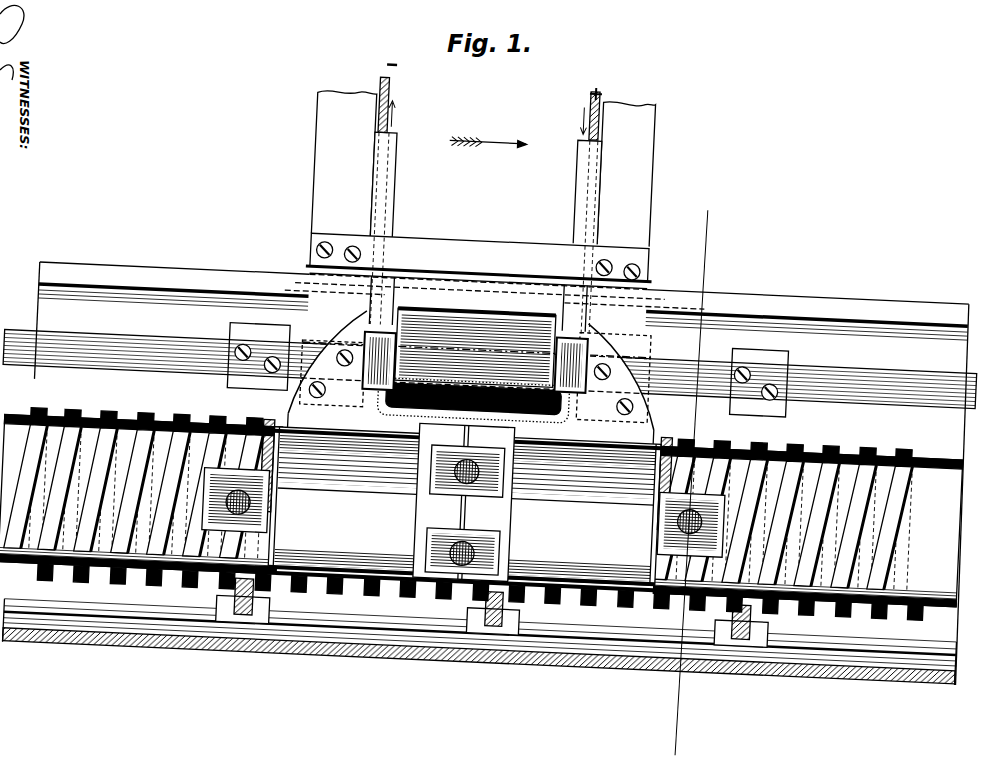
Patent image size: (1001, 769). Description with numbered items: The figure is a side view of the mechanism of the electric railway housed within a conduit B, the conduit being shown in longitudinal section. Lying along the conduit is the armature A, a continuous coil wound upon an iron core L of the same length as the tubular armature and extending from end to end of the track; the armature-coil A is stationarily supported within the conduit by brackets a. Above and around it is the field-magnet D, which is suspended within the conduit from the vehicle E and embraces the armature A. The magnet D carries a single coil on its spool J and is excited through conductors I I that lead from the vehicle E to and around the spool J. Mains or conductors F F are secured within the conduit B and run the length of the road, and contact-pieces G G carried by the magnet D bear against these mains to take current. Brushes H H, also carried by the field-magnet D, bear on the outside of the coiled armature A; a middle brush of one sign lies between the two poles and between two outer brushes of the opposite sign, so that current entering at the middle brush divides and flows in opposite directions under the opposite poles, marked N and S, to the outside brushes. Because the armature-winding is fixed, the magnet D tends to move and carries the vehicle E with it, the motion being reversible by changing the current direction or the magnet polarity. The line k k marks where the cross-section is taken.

The armature A is at (490, 511).
The conduit B is at (487, 640).
The field-magnet D is at (468, 430).
The vehicle E is at (498, 213).
The mains or conductors F is at (958, 379).
The contact-pieces G is at (600, 333).
The brushes H is at (463, 502).
The conductors I is at (490, 103).
The spool J is at (476, 365).
The iron core L is at (481, 507).
The north pole N is at (582, 513).
The south pole S is at (346, 502).
The brackets a is at (499, 612).
The section line k is at (691, 480).